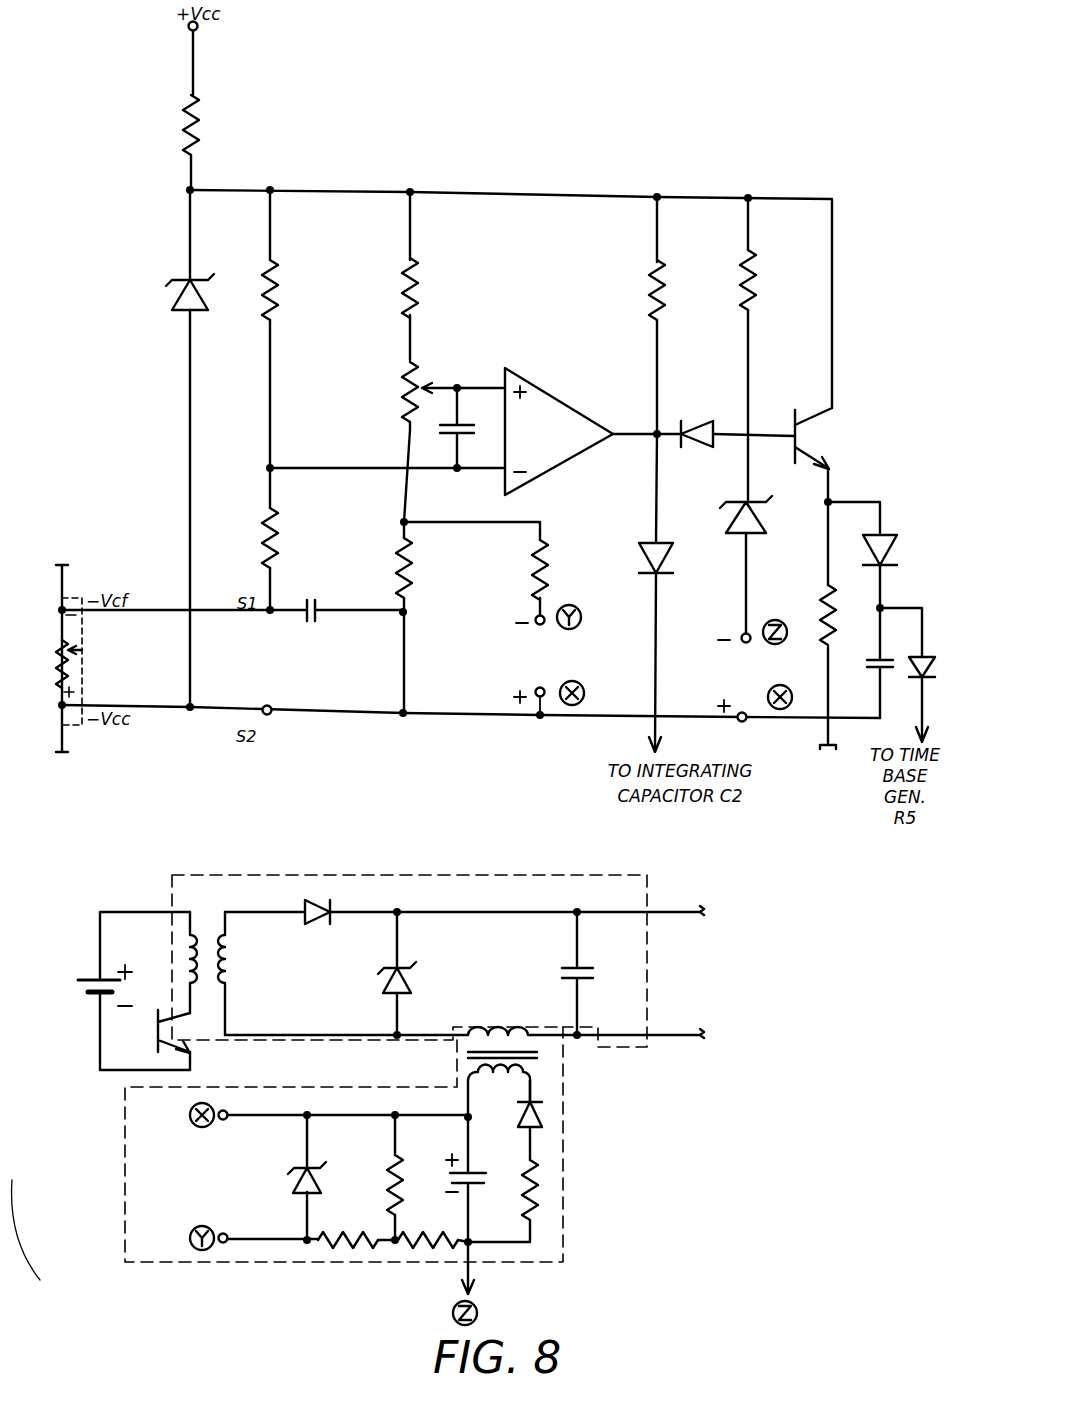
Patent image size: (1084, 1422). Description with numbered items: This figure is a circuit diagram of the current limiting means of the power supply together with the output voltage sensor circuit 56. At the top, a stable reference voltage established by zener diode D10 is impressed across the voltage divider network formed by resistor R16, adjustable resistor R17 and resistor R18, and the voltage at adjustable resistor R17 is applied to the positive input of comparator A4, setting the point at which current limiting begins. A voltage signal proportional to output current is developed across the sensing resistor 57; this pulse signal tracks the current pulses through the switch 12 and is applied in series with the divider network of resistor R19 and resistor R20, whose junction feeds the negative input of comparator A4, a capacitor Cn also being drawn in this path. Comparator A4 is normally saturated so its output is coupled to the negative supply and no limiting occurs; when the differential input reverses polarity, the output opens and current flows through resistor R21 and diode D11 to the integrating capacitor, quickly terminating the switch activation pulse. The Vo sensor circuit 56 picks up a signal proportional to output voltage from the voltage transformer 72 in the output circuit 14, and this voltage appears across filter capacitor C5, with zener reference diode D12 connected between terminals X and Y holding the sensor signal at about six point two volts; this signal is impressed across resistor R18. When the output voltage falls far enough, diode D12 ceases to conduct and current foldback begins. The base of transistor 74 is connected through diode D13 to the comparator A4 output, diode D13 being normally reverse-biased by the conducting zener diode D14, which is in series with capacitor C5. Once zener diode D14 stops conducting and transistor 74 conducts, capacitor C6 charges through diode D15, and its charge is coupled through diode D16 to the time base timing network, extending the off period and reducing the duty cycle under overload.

The switch 12 is at (188, 1049).
The output circuit 14 is at (507, 882).
The Vo sensor circuit 56 is at (563, 1178).
The sensing resistor 57 is at (85, 658).
The voltage transformer 72 is at (525, 1028).
The transistor 74 is at (810, 441).
The comparator A4 is at (612, 410).
The zener diode D10 is at (180, 448).
The diode D11 is at (633, 593).
The zener reference diode D12 is at (295, 1172).
The diode D13 is at (702, 424).
The zener diode D14 is at (759, 564).
The diode D15 is at (899, 571).
The diode D16 is at (939, 699).
The resistor R16 is at (429, 276).
The adjustable resistor R17 is at (406, 442).
The resistor R18 is at (381, 618).
The resistor R19 is at (288, 329).
The resistor R20 is at (287, 539).
The resistor R21 is at (638, 315).
The filter capacitor C5 is at (473, 1179).
The capacitor C6 is at (863, 663).
The capacitor Cn is at (307, 600).